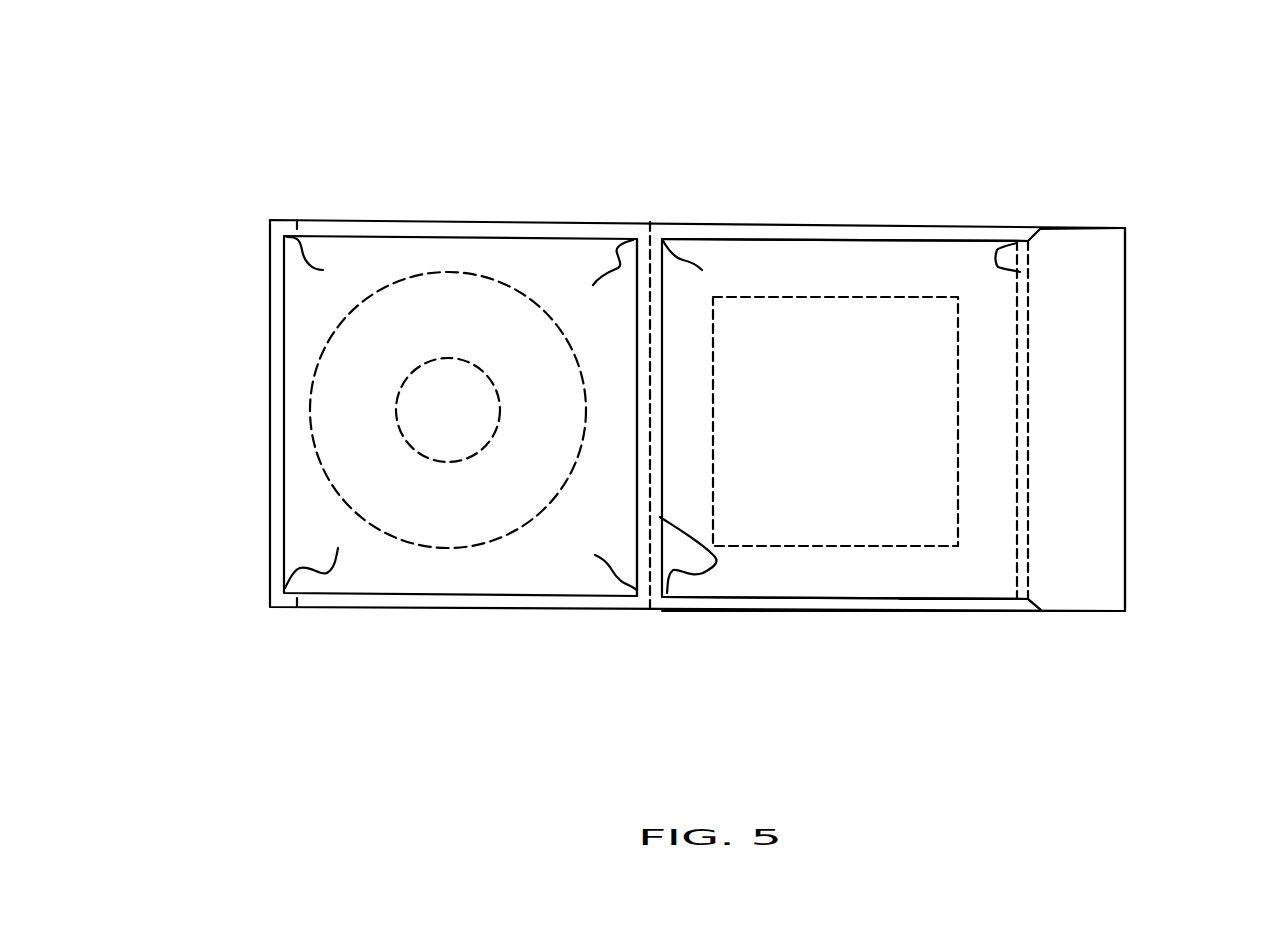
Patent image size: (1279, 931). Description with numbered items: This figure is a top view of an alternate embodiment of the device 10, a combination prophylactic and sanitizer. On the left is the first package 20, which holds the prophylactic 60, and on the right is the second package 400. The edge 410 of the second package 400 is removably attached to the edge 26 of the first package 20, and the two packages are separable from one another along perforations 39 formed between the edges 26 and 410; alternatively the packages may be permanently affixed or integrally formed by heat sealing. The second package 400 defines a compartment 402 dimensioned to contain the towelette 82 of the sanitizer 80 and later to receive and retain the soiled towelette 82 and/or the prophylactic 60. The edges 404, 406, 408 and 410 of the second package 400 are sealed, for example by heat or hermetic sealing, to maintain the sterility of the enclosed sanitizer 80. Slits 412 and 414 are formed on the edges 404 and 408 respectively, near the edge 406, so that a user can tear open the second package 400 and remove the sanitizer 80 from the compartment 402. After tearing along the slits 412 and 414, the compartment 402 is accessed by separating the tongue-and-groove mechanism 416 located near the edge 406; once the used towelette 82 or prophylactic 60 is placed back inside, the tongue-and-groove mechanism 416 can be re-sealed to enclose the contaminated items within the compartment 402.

The device 10 is at (250, 185).
The first package 20 is at (357, 247).
The edge 26 is at (637, 340).
The perforations 39 is at (645, 247).
The prophylactic 60 is at (447, 515).
The second package 400 is at (793, 267).
The edge 404 is at (720, 232).
The towelette 82 is at (855, 345).
The tongue-and-groove mechanism 416 is at (997, 258).
The slit 412 is at (1093, 229).
The edge 406 is at (1102, 453).
The sanitizer 80 is at (840, 512).
The edge 410 is at (712, 568).
The edge 408 is at (752, 603).
The compartment 402 is at (970, 582).
The slit 414 is at (1093, 593).